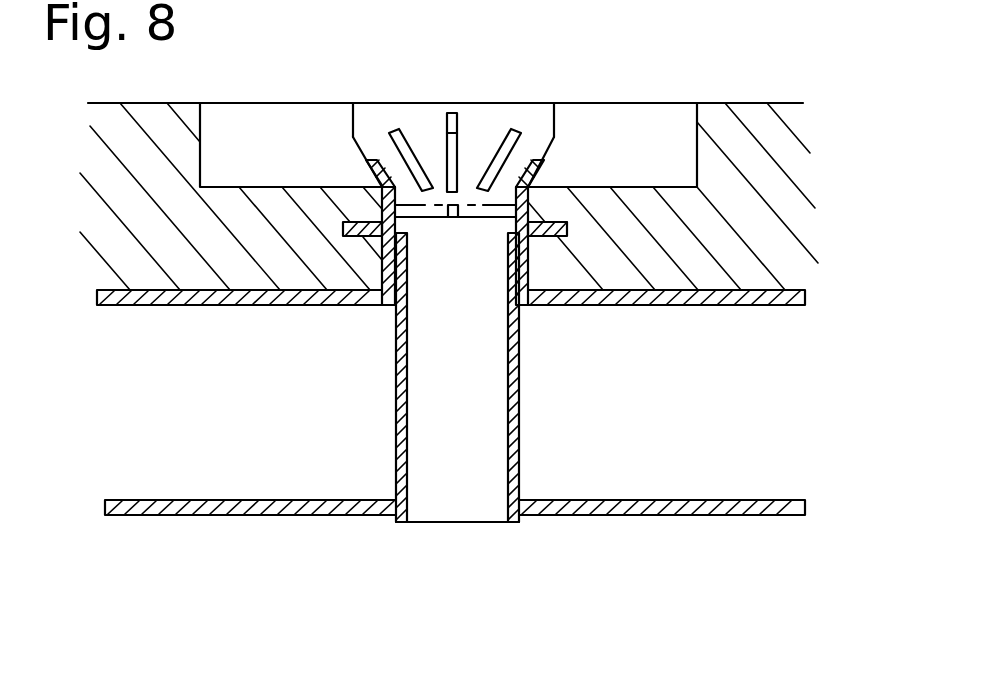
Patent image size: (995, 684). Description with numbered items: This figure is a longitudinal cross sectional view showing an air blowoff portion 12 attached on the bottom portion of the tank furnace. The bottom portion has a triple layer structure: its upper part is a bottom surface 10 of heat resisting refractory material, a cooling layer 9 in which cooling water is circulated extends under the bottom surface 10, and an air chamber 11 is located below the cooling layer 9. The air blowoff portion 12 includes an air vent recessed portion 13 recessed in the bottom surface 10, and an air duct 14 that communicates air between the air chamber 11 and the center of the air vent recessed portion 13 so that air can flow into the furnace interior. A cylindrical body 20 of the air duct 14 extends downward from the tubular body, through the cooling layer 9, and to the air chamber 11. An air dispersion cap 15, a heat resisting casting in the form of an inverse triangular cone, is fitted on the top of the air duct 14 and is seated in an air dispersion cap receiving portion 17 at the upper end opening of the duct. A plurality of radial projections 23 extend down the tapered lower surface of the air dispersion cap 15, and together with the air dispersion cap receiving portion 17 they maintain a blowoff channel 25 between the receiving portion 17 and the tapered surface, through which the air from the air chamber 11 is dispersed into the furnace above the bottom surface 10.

The cooling layer 9 is at (718, 406).
The bottom surface 10 is at (775, 121).
The air chamber 11 is at (575, 588).
The air blowoff portion 12 is at (352, 99).
The air vent recessed portion 13 is at (651, 122).
The air duct 14 is at (362, 365).
The air dispersion cap 15 is at (483, 118).
The air dispersion cap receiving portion 17 is at (565, 217).
The cylindrical body 20 is at (477, 405).
The radial projections 23 is at (452, 51).
The blowoff channel 25 is at (352, 164).